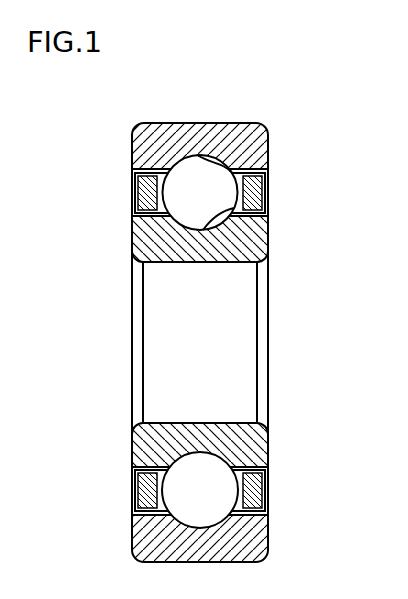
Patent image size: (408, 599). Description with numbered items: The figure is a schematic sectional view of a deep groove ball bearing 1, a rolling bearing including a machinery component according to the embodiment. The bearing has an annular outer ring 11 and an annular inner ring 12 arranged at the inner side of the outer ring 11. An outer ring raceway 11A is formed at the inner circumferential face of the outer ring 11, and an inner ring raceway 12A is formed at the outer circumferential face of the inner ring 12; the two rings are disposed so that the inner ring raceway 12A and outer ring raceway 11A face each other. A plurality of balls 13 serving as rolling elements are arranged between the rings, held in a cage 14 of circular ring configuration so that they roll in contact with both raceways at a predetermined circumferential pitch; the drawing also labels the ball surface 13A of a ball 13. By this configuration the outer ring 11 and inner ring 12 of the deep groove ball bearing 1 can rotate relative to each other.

The deep groove ball bearing 1 is at (299, 85).
The outer ring 11 is at (252, 144).
The outer ring raceway 11A is at (233, 166).
The inner ring 12 is at (248, 237).
The inner ring raceway 12A is at (228, 207).
The ball 13 is at (190, 178).
The ball surface 13A is at (183, 454).
The cage 14 is at (252, 187).